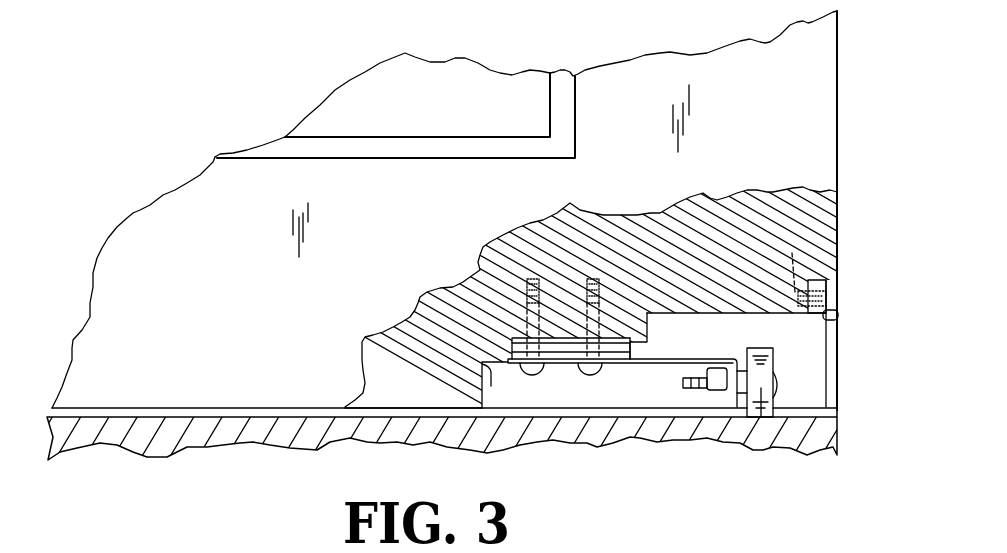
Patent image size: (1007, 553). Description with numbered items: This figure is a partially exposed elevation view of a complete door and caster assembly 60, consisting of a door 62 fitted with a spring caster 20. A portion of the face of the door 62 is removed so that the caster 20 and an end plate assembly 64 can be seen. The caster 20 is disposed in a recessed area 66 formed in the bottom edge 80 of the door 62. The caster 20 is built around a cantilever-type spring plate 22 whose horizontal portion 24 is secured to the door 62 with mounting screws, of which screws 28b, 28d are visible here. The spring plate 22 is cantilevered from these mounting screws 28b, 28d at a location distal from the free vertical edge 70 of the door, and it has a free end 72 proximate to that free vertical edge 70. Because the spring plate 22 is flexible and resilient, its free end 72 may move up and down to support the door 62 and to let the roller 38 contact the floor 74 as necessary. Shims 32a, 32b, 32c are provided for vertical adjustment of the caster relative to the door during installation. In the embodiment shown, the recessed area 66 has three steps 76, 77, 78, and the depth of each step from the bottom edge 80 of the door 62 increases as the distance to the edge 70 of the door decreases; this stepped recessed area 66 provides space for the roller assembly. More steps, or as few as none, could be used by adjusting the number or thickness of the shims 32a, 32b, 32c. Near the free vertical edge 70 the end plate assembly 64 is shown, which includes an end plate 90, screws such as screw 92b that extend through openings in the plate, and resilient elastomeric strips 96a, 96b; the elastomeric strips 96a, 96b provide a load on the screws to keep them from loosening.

The spring caster 20 is at (783, 359).
The spring plate 22 is at (648, 370).
The horizontal portion 24 is at (632, 368).
The mounting screw 28b is at (541, 281).
The mounting screw 28d is at (605, 281).
The shim 32a is at (522, 322).
The shim 32b is at (512, 335).
The shim 32c is at (510, 360).
The roller 38 is at (761, 417).
The door and caster assembly 60 is at (318, 79).
The door 62 is at (163, 211).
The end plate assembly 64 is at (845, 283).
The recessed area 66 is at (812, 382).
The free vertical edge 70 is at (842, 133).
The free end 72 is at (718, 366).
The floor 74 is at (293, 438).
The step 76 is at (753, 313).
The step 77 is at (640, 345).
The step 78 is at (482, 388).
The bottom edge 80 is at (456, 414).
The end plate 90 is at (831, 349).
The screw 92b is at (774, 257).
The elastomeric strip 96a is at (803, 292).
The elastomeric strip 96b is at (838, 315).